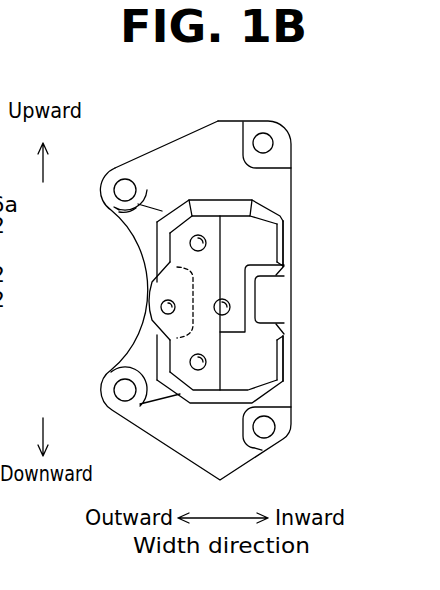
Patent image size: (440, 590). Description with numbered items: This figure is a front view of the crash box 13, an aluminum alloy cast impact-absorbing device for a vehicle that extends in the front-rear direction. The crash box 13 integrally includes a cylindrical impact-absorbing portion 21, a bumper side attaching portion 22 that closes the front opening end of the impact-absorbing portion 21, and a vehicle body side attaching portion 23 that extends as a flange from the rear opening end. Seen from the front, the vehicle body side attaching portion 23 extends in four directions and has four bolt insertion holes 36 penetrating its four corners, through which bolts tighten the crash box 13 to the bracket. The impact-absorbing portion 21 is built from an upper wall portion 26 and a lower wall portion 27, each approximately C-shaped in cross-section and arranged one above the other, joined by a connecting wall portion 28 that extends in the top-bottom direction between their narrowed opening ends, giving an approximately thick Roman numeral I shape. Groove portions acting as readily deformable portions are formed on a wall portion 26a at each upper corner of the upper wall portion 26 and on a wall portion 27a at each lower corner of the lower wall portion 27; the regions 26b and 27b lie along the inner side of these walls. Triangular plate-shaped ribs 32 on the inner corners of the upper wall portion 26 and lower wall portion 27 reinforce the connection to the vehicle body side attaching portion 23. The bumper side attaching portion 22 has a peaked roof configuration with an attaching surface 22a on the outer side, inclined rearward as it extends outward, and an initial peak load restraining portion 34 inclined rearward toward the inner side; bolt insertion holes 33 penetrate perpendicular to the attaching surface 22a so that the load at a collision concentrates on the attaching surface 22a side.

The crash box 13 is at (184, 111).
The cylindrical impact-absorbing portion 21 is at (150, 303).
The bumper side attaching portion 22 is at (155, 323).
The attaching surface 22a is at (160, 283).
The vehicle body side attaching portion 23 is at (170, 157).
The upper wall portion 26 is at (157, 247).
The wall portion 26a is at (265, 201).
The upper right side portion 26b is at (282, 241).
The lower wall portion 27 is at (157, 360).
The wall portion 27a is at (282, 397).
The lower right side portion 27b is at (283, 357).
The connecting wall portion 28 is at (258, 303).
The rib 32 is at (288, 272).
The bolt insertion holes 33 is at (222, 300).
The initial peak load restraining portion 34 is at (266, 226).
The bolt insertion holes 36 is at (125, 182).